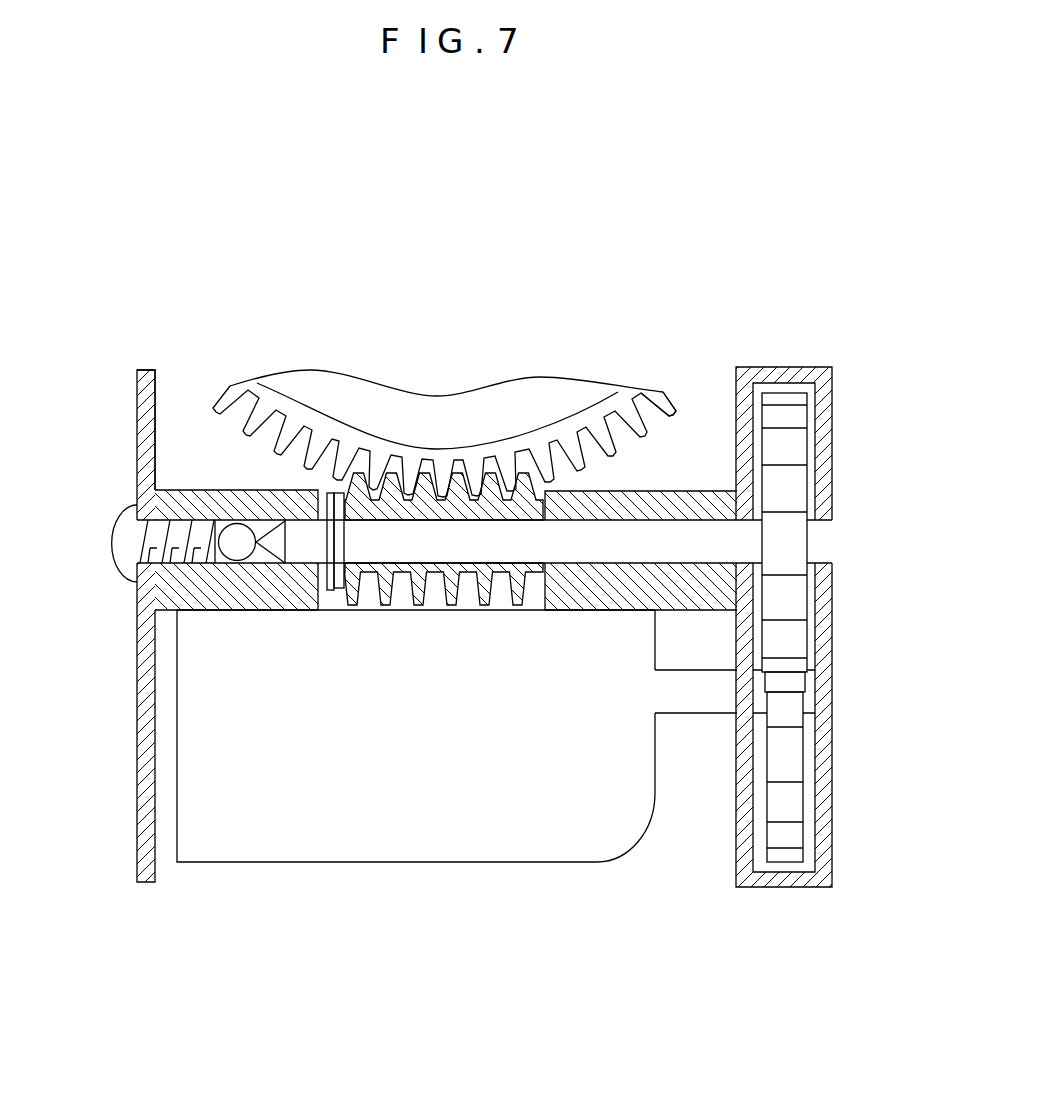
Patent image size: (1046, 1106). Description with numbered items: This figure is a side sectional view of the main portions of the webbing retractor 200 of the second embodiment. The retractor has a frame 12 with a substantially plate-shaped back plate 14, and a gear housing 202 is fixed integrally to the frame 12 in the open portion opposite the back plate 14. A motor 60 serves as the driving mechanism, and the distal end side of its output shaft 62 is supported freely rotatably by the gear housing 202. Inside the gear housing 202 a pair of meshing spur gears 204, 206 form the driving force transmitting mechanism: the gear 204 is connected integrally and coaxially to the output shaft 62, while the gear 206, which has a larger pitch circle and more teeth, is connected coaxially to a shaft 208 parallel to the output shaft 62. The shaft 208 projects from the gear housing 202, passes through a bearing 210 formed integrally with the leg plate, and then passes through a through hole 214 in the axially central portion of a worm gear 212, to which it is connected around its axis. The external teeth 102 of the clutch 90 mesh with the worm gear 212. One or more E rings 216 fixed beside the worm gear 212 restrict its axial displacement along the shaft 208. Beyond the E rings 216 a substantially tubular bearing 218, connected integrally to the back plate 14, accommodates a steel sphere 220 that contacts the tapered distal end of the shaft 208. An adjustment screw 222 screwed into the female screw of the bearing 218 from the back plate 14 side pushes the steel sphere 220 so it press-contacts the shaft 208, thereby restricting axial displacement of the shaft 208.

The frame 12 is at (100, 626).
The back plate 14 is at (110, 430).
The motor 60 is at (416, 775).
The output shaft 62 is at (735, 717).
The clutch 90 is at (497, 407).
The external teeth 102 is at (674, 373).
The webbing retractor 200 is at (481, 541).
The gear housing 202 is at (826, 627).
The gear 204 is at (842, 777).
The gear 206 is at (839, 542).
The shaft 208 is at (688, 599).
The bearing 210 is at (641, 518).
The worm gear 212 is at (444, 574).
The through hole 214 is at (395, 545).
The E rings 216 is at (360, 589).
The bearing 218 is at (236, 585).
The steel sphere 220 is at (242, 504).
The adjustment screw 222 is at (198, 580).